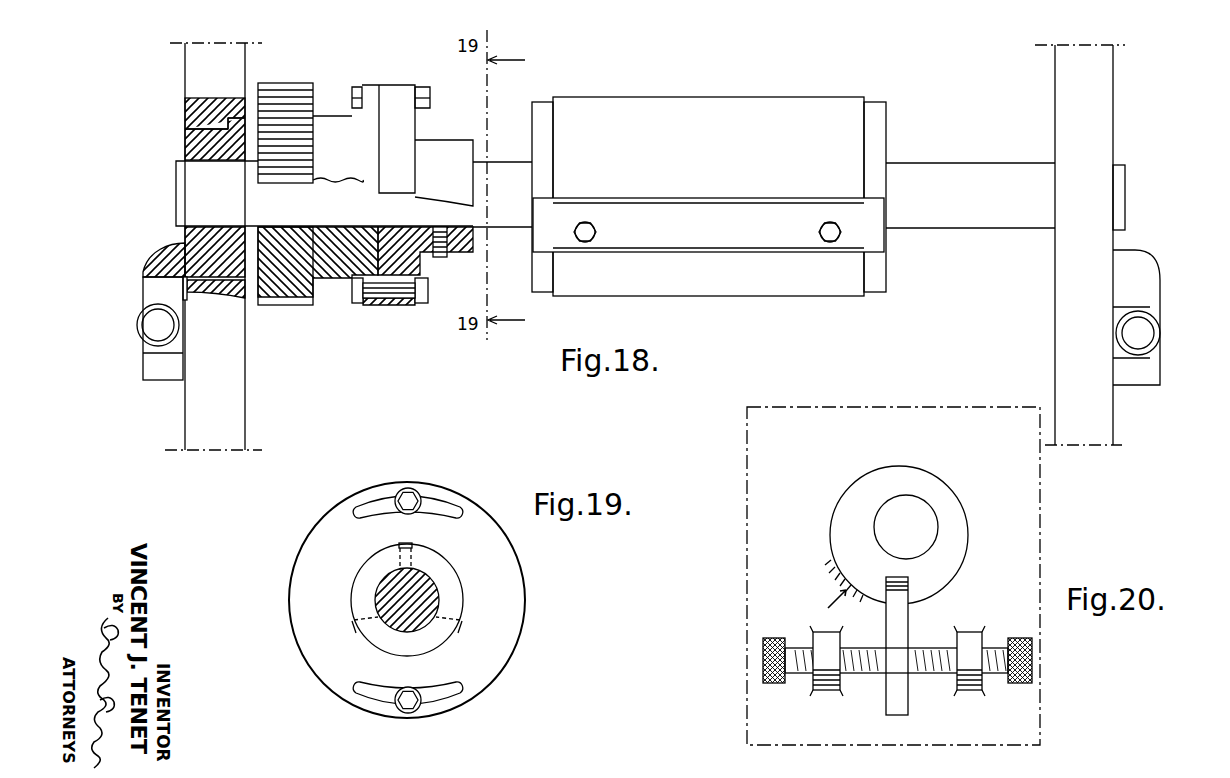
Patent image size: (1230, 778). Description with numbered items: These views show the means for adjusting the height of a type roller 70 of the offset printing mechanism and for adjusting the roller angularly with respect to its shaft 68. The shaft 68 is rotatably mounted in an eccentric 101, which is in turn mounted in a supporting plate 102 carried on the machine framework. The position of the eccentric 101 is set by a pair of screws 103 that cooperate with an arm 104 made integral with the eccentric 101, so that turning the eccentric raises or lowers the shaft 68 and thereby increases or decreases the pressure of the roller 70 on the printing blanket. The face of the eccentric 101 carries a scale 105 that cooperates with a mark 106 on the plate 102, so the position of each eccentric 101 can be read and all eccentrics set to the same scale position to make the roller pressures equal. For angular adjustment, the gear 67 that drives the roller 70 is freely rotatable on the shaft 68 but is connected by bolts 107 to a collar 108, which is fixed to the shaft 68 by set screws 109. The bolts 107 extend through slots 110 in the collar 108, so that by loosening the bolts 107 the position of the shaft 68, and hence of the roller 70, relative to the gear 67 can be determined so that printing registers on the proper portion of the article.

In FIG. 18, the gear 67 is at (280, 86).
In FIG. 18, the shaft 68 is at (950, 168).
In FIG. 18, the printing roller 70 is at (862, 147).
In FIG. 18, the eccentric 101 is at (195, 140).
In FIG. 20, the eccentric 101 is at (850, 518).
In FIG. 18, the supporting plate 102 is at (232, 381).
In FIG. 18, the screw 103 is at (158, 325).
In FIG. 20, the screw 103 is at (797, 648).
In FIG. 18, the arm 104 is at (155, 250).
In FIG. 20, the arm 104 is at (908, 616).
In FIG. 20, the scale 105 is at (838, 565).
In FIG. 20, the mark 106 is at (838, 604).
In FIG. 18, the bolt 107 is at (362, 88).
In FIG. 18, the collar 108 is at (405, 133).
In FIG. 19, the collar 108 is at (455, 582).
In FIG. 18, the set screw 109 is at (442, 260).
In FIG. 19, the set screw 109 is at (412, 546).
In FIG. 19, the slot 110 is at (440, 500).